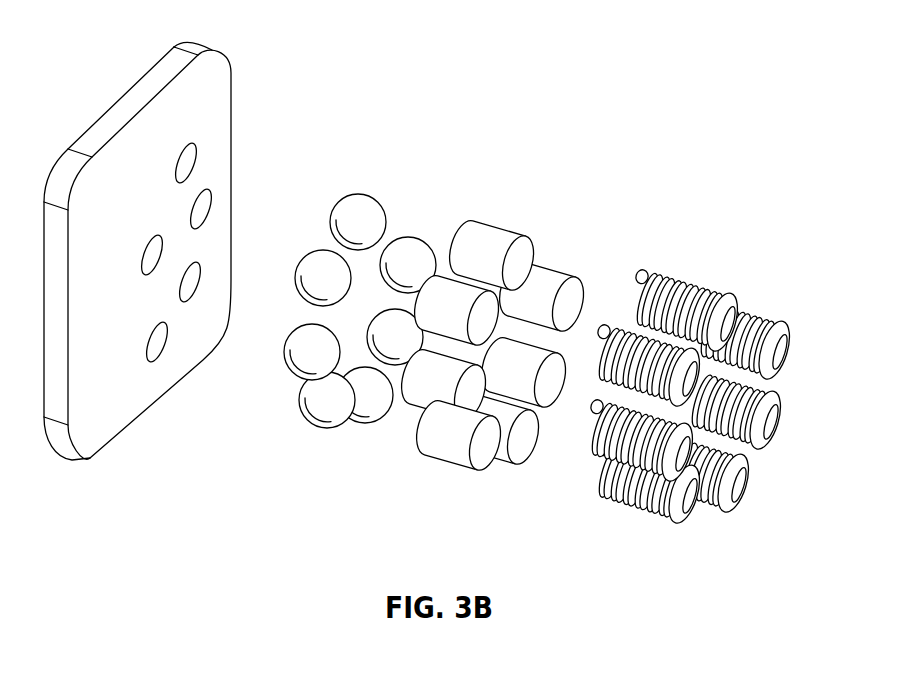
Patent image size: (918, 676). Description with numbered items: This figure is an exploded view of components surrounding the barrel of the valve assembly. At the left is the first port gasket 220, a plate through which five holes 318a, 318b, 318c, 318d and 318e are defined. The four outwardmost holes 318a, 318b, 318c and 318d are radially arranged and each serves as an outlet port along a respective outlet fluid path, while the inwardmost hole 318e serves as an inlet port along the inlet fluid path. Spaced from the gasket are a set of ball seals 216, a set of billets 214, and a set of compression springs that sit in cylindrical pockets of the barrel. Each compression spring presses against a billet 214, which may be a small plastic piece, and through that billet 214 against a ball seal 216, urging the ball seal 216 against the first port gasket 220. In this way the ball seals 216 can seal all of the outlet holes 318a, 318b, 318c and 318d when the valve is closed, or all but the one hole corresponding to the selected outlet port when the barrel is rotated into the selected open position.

The first port gasket 220 is at (212, 50).
The hole 318a is at (209, 200).
The hole 318b is at (197, 268).
The hole 318c is at (195, 144).
The hole 318d is at (165, 345).
The hole 318e is at (147, 241).
The ball seal 216 is at (396, 198).
The billet 214 is at (514, 220).